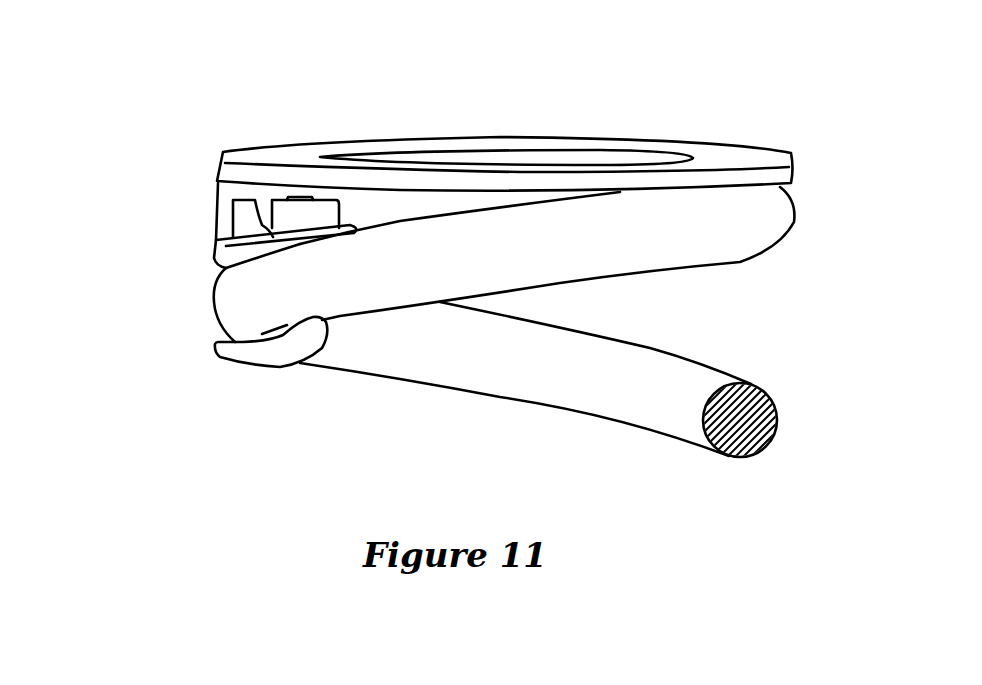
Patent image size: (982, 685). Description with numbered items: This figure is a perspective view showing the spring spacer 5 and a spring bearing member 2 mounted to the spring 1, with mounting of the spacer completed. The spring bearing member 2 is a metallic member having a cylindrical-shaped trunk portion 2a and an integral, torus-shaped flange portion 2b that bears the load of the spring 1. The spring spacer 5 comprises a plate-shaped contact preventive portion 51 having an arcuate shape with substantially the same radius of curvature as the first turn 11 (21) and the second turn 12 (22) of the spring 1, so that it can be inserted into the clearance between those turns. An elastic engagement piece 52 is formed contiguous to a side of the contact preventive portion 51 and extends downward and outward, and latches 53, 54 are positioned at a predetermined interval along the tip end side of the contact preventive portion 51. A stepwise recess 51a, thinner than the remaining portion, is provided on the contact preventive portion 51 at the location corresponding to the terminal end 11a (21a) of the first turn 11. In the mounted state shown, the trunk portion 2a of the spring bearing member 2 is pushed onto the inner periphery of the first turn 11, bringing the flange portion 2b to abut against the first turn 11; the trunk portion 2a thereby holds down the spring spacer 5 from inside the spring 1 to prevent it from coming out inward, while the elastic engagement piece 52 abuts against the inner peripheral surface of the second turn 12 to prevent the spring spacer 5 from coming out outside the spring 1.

The spring 1 is at (800, 213).
The spring bearing member 2 is at (739, 152).
The trunk portion 2a is at (373, 207).
The flange portion 2b is at (247, 157).
The spring spacer 5 is at (185, 253).
The first turn 11 is at (493, 207).
The first turn 21 is at (693, 238).
The terminal end 11a is at (213, 174).
The terminal end 21a is at (220, 192).
The second turn 12 is at (177, 331).
The second turn 22 is at (217, 272).
The contact preventive portion 51 is at (192, 225).
The stepwise recess 51a is at (213, 242).
The elastic engagement piece 52 is at (233, 348).
The latch 53 is at (250, 210).
The latch 54 is at (318, 212).